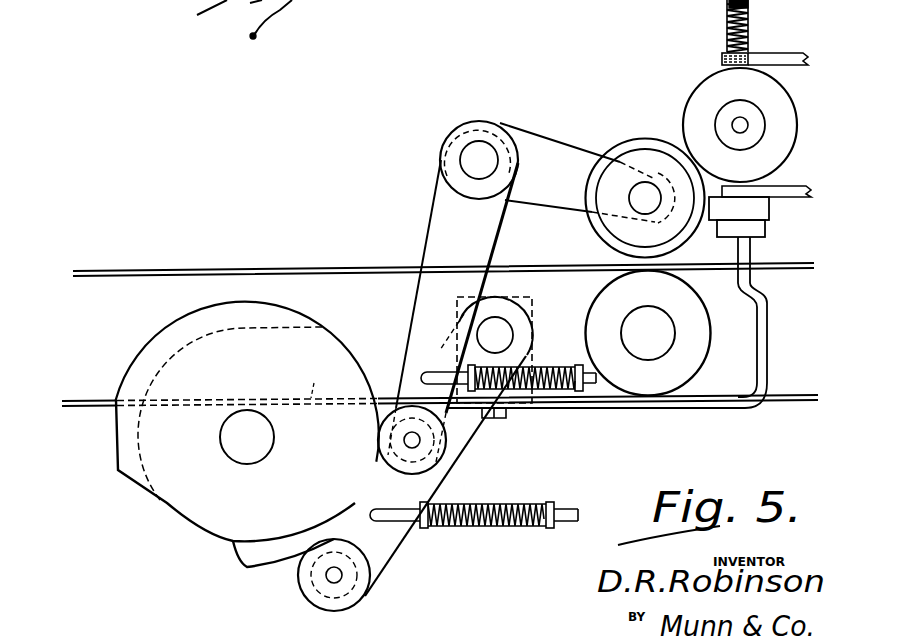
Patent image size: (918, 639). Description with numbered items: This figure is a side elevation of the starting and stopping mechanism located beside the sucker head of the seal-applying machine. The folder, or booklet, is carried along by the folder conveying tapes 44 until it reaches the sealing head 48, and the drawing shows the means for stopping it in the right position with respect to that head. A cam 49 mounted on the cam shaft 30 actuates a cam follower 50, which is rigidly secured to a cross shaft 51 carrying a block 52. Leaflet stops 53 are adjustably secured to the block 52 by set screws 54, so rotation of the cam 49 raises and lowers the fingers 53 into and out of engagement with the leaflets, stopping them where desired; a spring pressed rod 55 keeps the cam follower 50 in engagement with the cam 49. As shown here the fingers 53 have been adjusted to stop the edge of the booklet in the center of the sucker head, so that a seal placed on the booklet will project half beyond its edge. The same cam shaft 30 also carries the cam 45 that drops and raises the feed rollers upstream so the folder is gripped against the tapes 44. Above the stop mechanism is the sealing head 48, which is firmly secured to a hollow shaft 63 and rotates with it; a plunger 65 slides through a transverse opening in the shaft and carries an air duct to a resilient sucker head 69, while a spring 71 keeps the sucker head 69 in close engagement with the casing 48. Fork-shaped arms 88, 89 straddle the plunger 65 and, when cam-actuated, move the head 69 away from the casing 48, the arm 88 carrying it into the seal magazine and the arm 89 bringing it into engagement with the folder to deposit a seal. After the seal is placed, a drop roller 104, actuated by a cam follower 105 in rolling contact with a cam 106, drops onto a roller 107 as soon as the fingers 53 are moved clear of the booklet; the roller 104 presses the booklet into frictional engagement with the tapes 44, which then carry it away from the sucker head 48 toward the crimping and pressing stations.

The cam shaft 30 is at (262, 450).
The folder conveying tapes 44 is at (300, 266).
The cam 45 is at (690, 0).
The sealing head 48 is at (700, 98).
The cam 49 is at (250, 558).
The cam follower 50 is at (458, 432).
The cross shaft 51 is at (497, 335).
The block 52 is at (532, 297).
The leaflet stops 53 is at (785, 308).
The set screws 54 is at (507, 414).
The spring pressed rod 55 is at (514, 524).
The hollow shaft 63 is at (722, 122).
The plunger 65 is at (749, 20).
The resilient sucker head 69 is at (755, 230).
The spring 71 is at (749, 52).
The arm 88 is at (787, 55).
The arm 89 is at (797, 186).
The drop roller 104 is at (619, 150).
The cam follower 105 is at (441, 212).
The cam 106 is at (305, 322).
The roller 107 is at (676, 381).